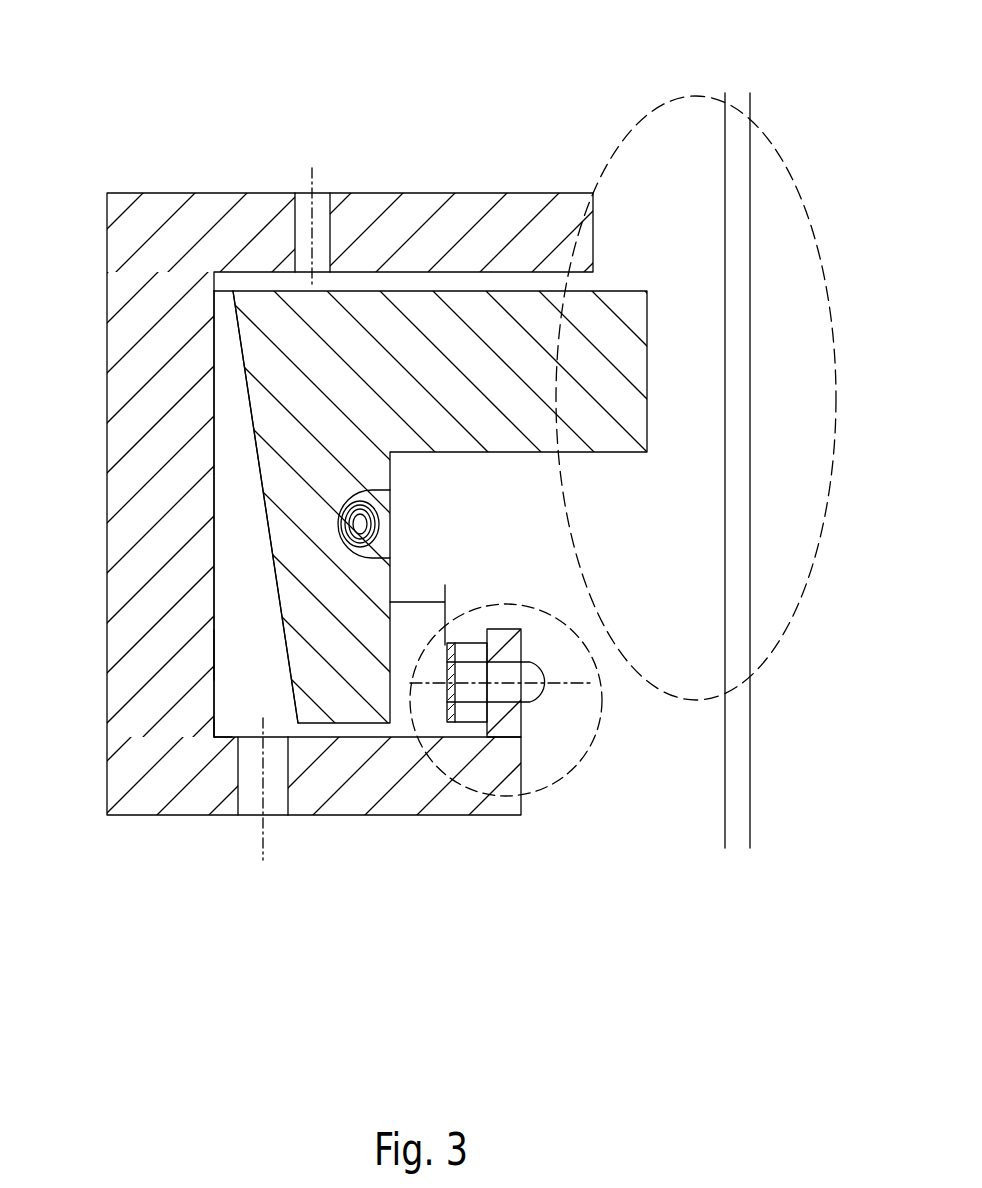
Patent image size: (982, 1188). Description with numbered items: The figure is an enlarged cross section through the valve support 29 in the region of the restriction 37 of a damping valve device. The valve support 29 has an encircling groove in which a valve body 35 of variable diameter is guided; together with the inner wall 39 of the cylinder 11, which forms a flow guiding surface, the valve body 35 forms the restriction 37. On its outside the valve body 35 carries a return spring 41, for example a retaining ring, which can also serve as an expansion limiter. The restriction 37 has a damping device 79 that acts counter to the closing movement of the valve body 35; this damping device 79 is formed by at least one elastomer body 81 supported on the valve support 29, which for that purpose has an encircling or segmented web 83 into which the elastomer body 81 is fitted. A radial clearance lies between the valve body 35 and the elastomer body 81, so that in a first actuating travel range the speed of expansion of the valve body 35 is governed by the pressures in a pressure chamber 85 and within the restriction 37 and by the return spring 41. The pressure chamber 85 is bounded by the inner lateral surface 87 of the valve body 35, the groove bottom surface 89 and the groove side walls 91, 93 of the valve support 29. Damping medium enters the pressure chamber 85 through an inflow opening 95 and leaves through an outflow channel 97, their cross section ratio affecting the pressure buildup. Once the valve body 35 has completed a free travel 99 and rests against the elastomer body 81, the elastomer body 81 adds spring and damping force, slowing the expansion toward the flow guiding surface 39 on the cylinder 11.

The cylinder 11 is at (740, 143).
The valve support 29 is at (157, 612).
The valve body 35 is at (315, 405).
The restriction 37 is at (632, 130).
The inner wall 39 is at (723, 140).
The return spring 41 is at (380, 525).
The damping device 79 is at (580, 774).
The elastomer body 81 is at (536, 708).
The web 83 is at (510, 723).
The pressure chamber 85 is at (230, 558).
The inner lateral surface 87 is at (262, 493).
The groove bottom surface 89 is at (222, 646).
The groove side wall 91 is at (216, 714).
The groove side wall 93 is at (252, 279).
The inflow opening 95 is at (278, 800).
The outflow channel 97 is at (303, 210).
The free travel 99 is at (403, 603).